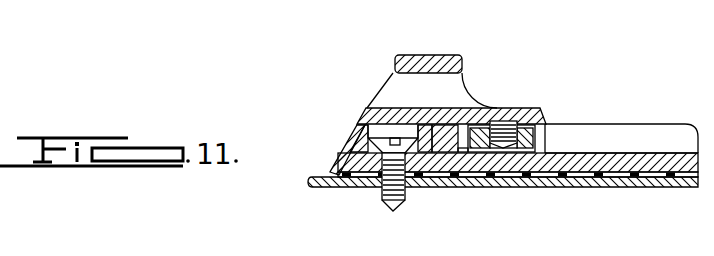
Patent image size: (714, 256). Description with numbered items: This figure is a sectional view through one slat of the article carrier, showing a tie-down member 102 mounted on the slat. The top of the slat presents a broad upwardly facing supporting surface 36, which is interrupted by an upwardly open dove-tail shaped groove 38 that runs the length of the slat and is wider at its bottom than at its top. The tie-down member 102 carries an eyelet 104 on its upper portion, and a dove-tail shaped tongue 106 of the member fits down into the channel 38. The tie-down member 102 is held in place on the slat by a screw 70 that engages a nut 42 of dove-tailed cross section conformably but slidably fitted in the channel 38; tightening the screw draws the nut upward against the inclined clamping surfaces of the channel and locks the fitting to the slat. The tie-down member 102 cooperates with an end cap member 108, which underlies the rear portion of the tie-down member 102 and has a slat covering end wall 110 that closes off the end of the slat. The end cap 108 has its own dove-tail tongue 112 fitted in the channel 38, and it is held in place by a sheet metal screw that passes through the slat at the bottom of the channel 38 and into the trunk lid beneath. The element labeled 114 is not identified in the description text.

The supporting surface 36 is at (617, 123).
The dove-tail shaped groove 38 is at (647, 137).
The nut 42 is at (530, 143).
The screw 70 is at (503, 125).
The tie-down member 102 is at (357, 112).
The eyelet 104 is at (458, 78).
The dove-tail shaped tongue 106 is at (456, 147).
The end cap member 108 is at (353, 128).
The slat covering end wall 110 is at (340, 148).
The dove-tail tongue 112 is at (427, 153).
The screw 114 is at (392, 186).